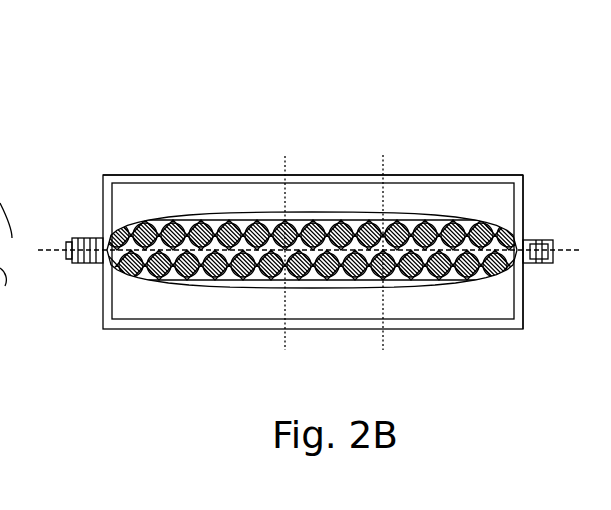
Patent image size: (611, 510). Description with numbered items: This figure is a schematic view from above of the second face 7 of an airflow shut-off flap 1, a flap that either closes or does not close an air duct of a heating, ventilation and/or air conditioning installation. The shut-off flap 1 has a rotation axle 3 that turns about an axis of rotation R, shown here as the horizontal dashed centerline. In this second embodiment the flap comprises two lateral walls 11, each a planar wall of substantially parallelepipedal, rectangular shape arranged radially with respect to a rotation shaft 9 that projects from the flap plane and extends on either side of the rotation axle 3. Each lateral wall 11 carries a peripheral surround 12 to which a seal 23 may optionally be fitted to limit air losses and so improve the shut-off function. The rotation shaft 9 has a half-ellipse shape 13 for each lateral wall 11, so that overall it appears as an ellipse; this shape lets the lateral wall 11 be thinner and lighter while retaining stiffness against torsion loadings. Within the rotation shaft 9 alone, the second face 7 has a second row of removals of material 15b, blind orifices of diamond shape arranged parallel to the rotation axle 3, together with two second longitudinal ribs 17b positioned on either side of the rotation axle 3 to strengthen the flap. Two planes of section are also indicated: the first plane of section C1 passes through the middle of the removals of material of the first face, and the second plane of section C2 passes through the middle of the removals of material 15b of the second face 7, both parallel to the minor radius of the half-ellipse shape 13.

The shut-off flap 1 is at (532, 73).
The rotation axle 3 is at (93, 267).
The second face 7 is at (525, 303).
The rotation shaft 9 is at (493, 221).
The lateral wall 11 is at (155, 198).
The peripheral surround 12 is at (492, 174).
The half-ellipse shape 13 is at (220, 222).
The second row of removals of material 15b is at (228, 222).
The second longitudinal rib 17b is at (307, 224).
The seal 23 is at (433, 174).
The first plane of section C1 is at (383, 155).
The second plane of section C2 is at (285, 156).
The axis of rotation R is at (38, 250).